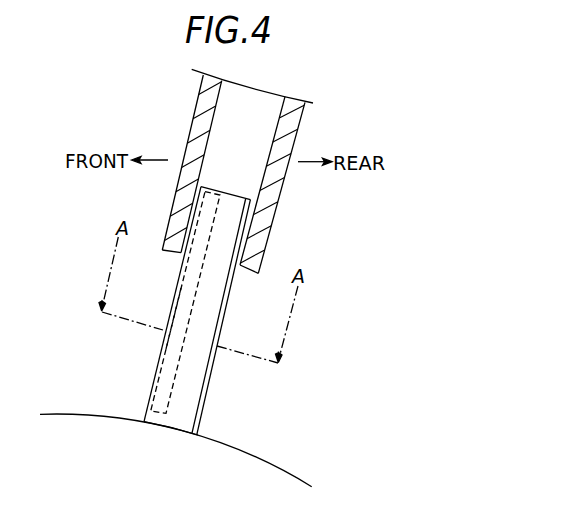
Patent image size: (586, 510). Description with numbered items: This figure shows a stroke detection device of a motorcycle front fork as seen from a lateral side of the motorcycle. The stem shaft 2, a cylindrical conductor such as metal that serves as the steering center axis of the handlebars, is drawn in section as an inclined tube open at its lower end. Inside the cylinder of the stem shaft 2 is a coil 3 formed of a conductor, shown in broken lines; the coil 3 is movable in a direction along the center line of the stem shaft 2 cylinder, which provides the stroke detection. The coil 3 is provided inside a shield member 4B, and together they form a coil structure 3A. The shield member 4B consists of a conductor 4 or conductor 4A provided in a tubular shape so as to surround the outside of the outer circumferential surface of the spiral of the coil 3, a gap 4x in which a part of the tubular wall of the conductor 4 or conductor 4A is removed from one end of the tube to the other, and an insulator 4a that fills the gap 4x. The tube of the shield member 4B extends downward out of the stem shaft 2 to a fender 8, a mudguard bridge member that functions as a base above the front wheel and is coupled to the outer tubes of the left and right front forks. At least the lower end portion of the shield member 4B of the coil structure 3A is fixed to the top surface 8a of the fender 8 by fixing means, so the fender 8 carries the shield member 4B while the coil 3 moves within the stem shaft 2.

The stem shaft 2 is at (297, 130).
The coil 3 is at (160, 366).
The coil structure 3A is at (161, 351).
The conductor 4 is at (213, 311).
The conductor 4A is at (197, 304).
The insulator 4a is at (211, 368).
The gap 4x is at (228, 294).
The shield member 4B is at (234, 311).
The fender 8 is at (241, 453).
The top surface of the fender 8a is at (206, 438).